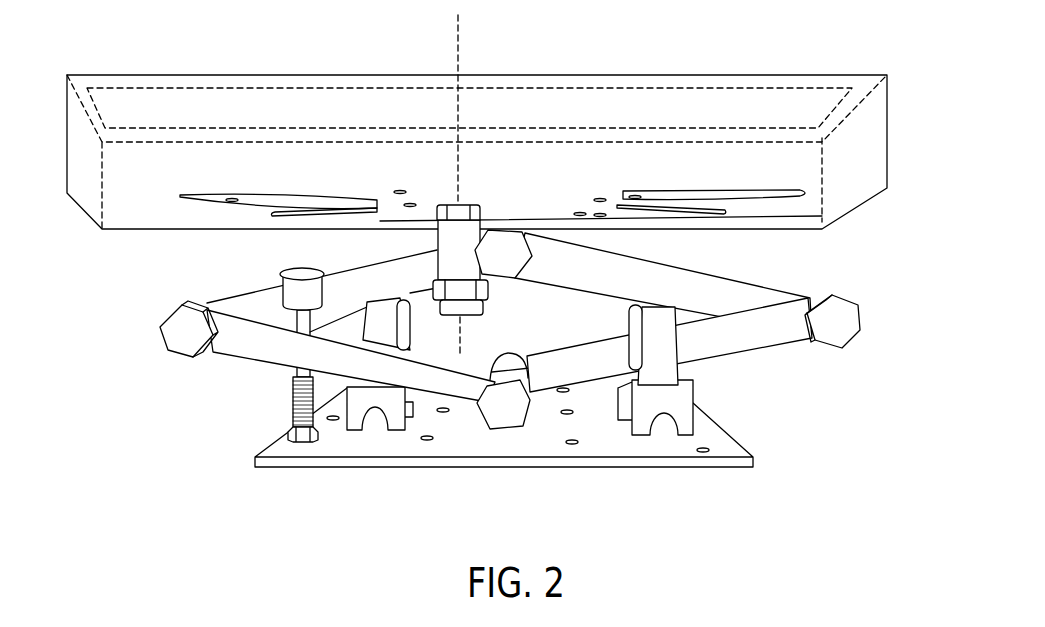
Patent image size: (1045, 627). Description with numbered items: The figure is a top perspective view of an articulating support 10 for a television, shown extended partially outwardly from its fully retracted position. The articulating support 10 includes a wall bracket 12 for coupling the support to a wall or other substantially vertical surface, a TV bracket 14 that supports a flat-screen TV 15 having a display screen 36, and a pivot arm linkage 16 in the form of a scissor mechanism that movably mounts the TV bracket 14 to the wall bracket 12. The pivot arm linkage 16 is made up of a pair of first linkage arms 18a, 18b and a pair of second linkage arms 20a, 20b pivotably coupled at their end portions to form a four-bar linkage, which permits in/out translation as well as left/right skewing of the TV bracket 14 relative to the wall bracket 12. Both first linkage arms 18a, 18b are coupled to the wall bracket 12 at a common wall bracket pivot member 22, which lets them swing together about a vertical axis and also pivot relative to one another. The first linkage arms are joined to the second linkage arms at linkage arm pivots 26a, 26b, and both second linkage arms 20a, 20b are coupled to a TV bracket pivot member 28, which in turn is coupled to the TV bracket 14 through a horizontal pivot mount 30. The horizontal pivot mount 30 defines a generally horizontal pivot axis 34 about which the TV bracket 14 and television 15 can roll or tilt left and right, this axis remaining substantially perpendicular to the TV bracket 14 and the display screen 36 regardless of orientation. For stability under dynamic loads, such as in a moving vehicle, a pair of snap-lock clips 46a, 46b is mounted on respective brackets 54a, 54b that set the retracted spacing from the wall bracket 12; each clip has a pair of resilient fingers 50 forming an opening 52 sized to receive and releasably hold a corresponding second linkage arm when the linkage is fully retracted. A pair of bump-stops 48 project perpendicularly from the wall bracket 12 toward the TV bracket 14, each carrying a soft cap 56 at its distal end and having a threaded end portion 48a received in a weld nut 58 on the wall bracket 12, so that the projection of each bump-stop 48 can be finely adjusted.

The articulating support 10 is at (813, 477).
The wall bracket 12 is at (658, 468).
The TV bracket 14 is at (380, 222).
The flat-screen TV 15 is at (695, 75).
The pivot arm linkage 16 is at (870, 240).
The first linkage arm 18a is at (243, 367).
The first linkage arm 18b is at (745, 345).
The second linkage arm 20a is at (347, 267).
The second linkage arm 20b is at (693, 268).
The wall bracket pivot member 22 is at (508, 360).
The linkage arm pivot 26a is at (203, 305).
The linkage arm pivot 26b is at (815, 293).
The TV bracket pivot member 28 is at (512, 280).
The horizontal pivot mount 30 is at (437, 262).
The horizontal pivot axis 34 is at (456, 37).
The display screen 36 is at (578, 88).
The snap-lock clip 46a is at (360, 322).
The snap-lock clip 46b is at (697, 370).
The bump-stop 48 is at (258, 385).
The threaded end portion 48a is at (290, 397).
The resilient fingers 50 is at (392, 332).
The opening 52 is at (415, 325).
The bracket 54a is at (397, 418).
The bracket 54b is at (693, 400).
The cap 56 is at (282, 280).
The weld nut 58 is at (320, 433).